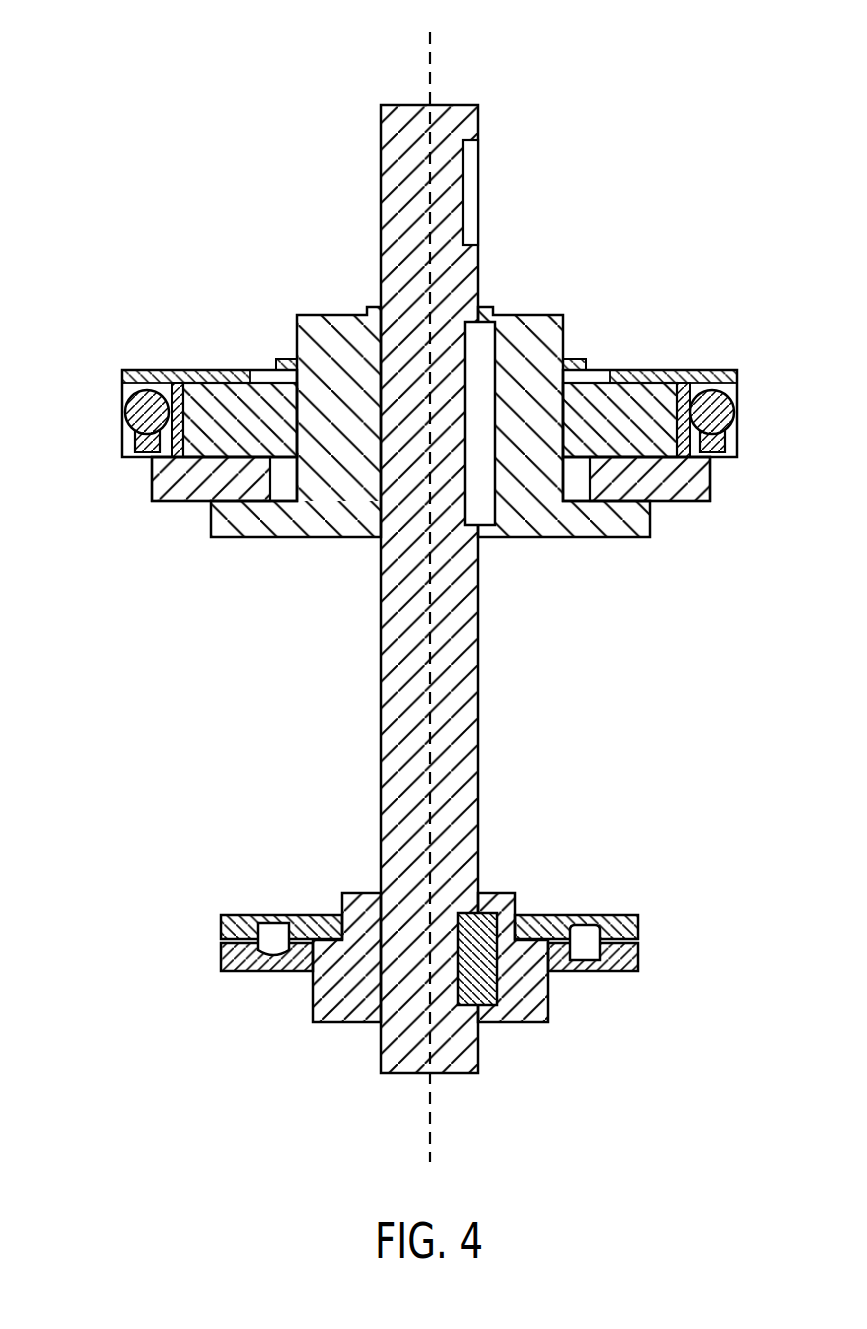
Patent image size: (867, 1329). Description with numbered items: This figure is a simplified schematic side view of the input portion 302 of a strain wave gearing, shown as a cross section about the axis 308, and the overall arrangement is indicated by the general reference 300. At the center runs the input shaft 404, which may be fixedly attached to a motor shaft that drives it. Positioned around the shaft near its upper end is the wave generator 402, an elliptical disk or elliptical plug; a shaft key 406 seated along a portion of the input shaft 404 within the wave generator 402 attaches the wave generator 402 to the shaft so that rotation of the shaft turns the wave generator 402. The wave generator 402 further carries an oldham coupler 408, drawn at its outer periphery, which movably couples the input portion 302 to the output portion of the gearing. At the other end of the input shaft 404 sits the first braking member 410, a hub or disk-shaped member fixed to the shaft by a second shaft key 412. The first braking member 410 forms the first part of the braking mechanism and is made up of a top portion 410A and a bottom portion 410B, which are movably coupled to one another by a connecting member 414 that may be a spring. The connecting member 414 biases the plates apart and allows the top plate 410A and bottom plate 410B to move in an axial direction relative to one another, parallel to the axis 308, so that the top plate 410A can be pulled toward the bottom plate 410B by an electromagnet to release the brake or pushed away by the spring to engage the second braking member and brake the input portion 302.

The drive system 300 is at (131, 70).
The input portion 302 is at (307, 164).
The axis 308 is at (432, 63).
The wave generator 402 is at (540, 352).
The input shaft 404 is at (467, 270).
The shaft key 406 is at (498, 485).
The oldham coupler 408 is at (710, 372).
The first braking member 410 is at (650, 956).
The top portion 410A is at (618, 915).
The bottom portion 410B is at (617, 972).
The shaft key 412 is at (487, 986).
The connecting member 414 is at (586, 953).